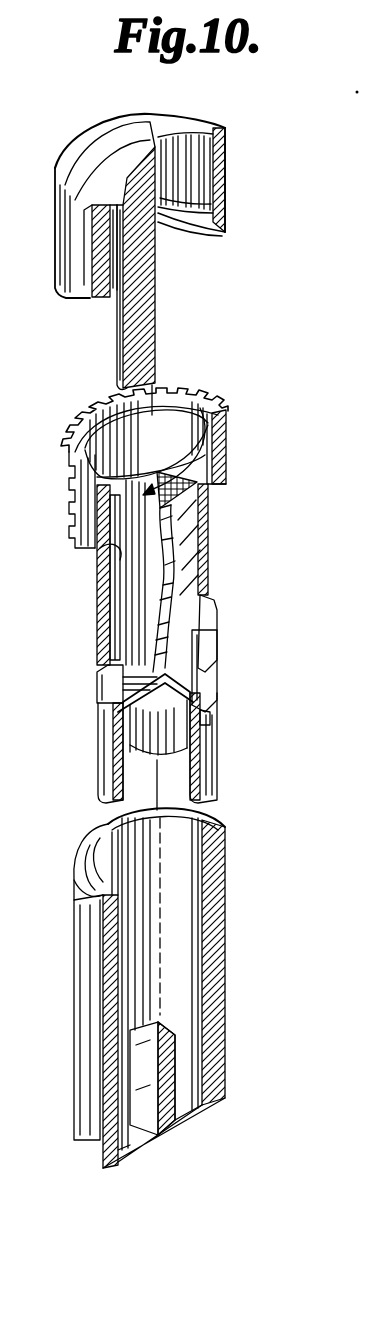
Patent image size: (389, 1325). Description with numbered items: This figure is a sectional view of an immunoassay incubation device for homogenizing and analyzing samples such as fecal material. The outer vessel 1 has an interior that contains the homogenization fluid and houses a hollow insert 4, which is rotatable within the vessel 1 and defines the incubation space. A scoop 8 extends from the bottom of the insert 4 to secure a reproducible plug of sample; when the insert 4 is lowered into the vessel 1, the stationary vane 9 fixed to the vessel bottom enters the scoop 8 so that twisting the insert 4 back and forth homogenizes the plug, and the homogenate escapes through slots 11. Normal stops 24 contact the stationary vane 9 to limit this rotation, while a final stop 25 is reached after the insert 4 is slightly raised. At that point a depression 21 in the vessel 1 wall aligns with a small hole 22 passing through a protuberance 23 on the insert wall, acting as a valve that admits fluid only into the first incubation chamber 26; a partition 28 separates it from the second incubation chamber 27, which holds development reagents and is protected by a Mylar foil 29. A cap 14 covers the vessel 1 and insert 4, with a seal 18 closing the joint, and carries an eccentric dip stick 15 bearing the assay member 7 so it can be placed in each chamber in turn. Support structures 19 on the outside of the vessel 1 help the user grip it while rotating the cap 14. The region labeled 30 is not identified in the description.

The vessel 1 is at (97, 944).
The insert 4 is at (100, 572).
The assay member 7 is at (153, 303).
The scoop 8 is at (148, 757).
The stationary vane 9 is at (152, 1025).
The slots 11 is at (190, 800).
The cap 14 is at (210, 118).
The dip stick 15 is at (165, 273).
The seal 18 is at (215, 223).
The support structures 19 is at (110, 1015).
The depression 21 is at (100, 842).
The small hole 22 is at (200, 690).
The protuberance 23 is at (217, 648).
The normal stop 24 is at (205, 718).
The final stop 25 is at (187, 770).
The first incubation chamber 26 is at (97, 560).
The second incubation chamber 27 is at (207, 400).
The partition 28 is at (188, 540).
The Mylar foil 29 is at (178, 470).
The wall 30 is at (100, 612).